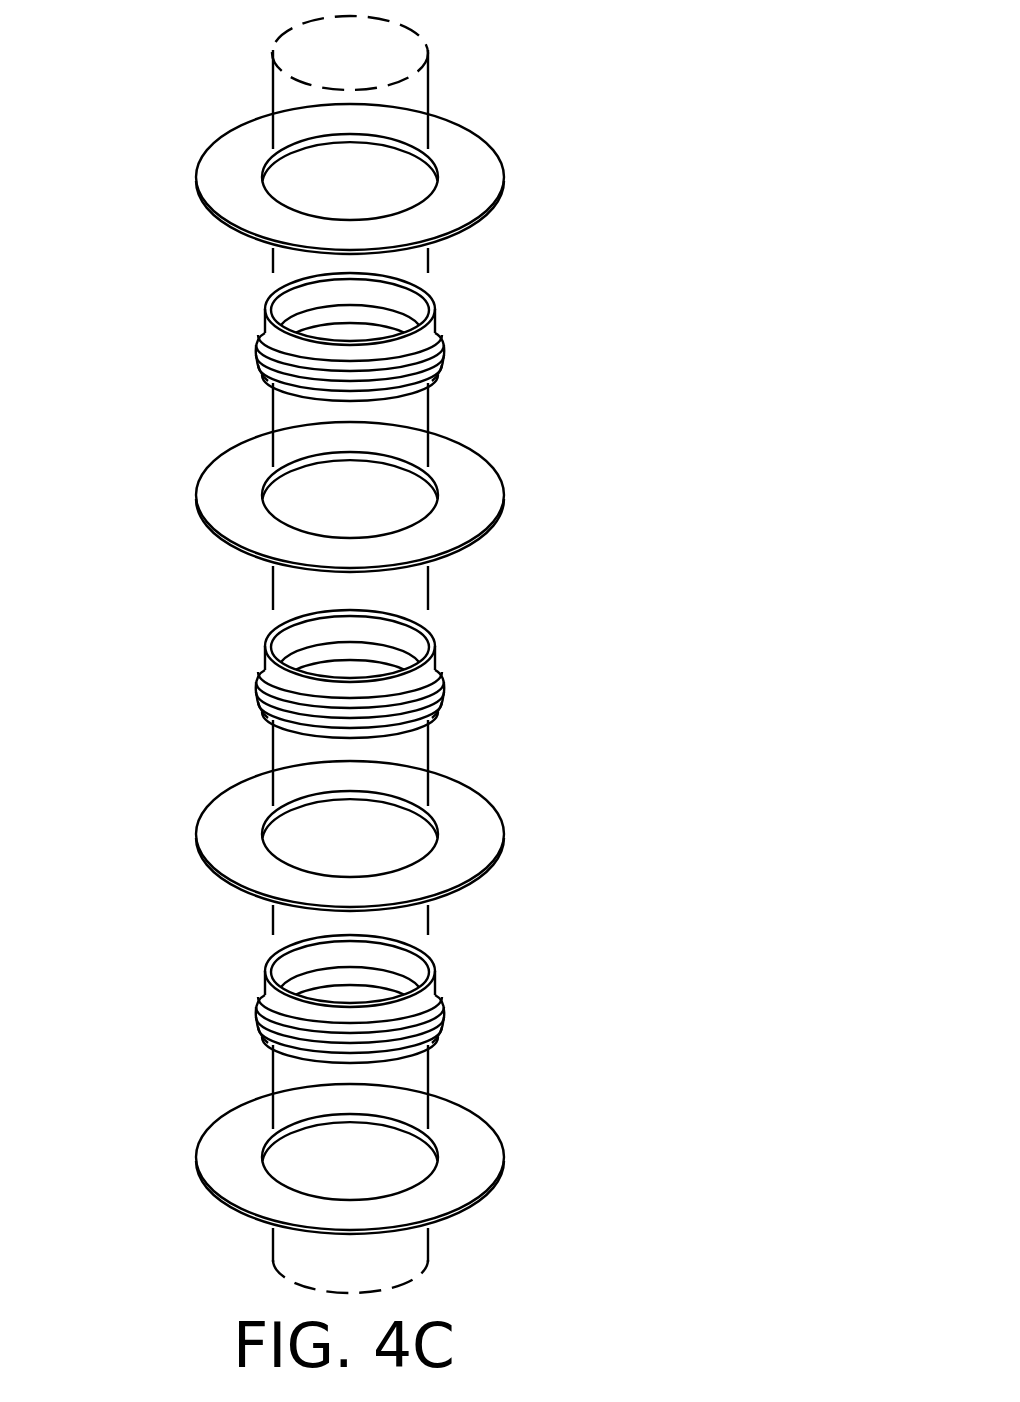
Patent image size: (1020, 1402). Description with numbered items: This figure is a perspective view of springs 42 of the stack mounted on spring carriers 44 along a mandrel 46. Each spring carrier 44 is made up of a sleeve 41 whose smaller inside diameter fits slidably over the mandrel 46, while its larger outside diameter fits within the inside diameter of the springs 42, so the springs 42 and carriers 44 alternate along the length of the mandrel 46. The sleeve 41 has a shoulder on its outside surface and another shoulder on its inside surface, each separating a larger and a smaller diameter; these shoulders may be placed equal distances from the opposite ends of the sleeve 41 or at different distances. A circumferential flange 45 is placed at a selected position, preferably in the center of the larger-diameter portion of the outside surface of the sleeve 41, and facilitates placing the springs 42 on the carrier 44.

The sleeve 41 is at (358, 329).
The spring 42 is at (358, 669).
The spring carrier 44 is at (373, 310).
The circumferential flange 45 is at (443, 685).
The mandrel 46 is at (223, 197).